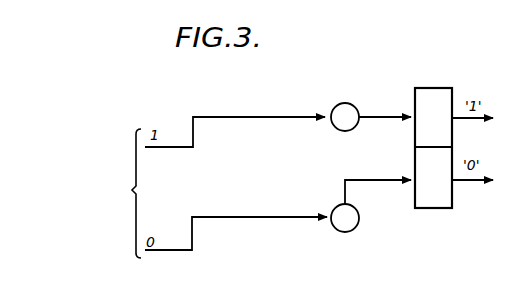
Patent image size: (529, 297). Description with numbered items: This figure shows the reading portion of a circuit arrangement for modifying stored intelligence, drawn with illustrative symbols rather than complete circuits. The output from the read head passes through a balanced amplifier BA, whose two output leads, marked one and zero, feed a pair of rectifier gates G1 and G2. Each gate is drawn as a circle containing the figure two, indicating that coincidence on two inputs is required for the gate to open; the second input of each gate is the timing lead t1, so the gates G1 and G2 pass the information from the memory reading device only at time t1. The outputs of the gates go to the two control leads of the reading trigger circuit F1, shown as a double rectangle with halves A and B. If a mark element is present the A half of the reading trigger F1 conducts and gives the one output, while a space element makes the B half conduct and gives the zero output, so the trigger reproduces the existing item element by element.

The gate G1 is at (351, 110).
The gate G2 is at (350, 209).
The reading trigger circuit F1 is at (426, 119).
The time t1 is at (339, 103).
The balanced amplifier BA is at (82, 193).